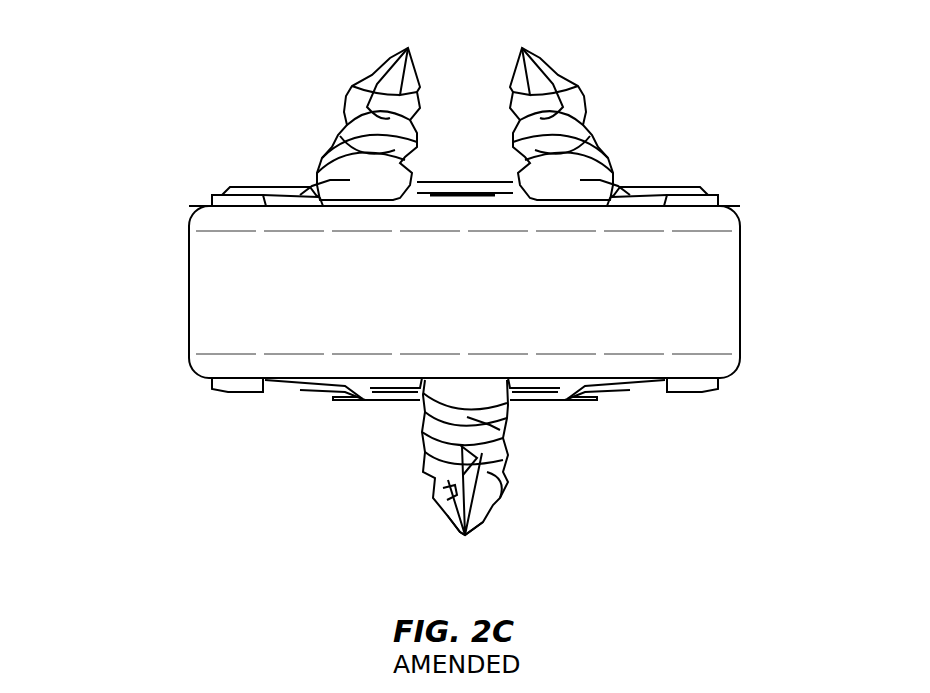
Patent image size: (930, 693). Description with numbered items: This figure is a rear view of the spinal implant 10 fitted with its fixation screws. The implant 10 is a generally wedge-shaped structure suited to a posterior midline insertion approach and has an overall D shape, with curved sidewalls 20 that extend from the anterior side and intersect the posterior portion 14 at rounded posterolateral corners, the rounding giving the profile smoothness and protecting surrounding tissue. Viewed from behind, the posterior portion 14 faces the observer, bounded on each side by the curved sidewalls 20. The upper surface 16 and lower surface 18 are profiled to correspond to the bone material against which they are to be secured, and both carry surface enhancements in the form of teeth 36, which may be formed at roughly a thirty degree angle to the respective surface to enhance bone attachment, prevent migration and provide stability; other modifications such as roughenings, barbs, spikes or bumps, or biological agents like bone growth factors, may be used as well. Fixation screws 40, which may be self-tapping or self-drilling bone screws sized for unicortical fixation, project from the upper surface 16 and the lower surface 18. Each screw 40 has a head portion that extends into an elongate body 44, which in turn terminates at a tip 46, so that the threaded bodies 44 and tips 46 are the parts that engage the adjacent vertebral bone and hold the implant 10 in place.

The spinal implant 10 is at (708, 88).
The posterior portion 14 is at (595, 325).
The upper surface 16 is at (248, 185).
The lower surface 18 is at (290, 395).
The curved sidewalls 20 is at (187, 290).
The teeth 36 is at (678, 185).
The fixation screw 40 is at (330, 100).
The elongate body 44 is at (508, 420).
The tip 46 is at (467, 535).